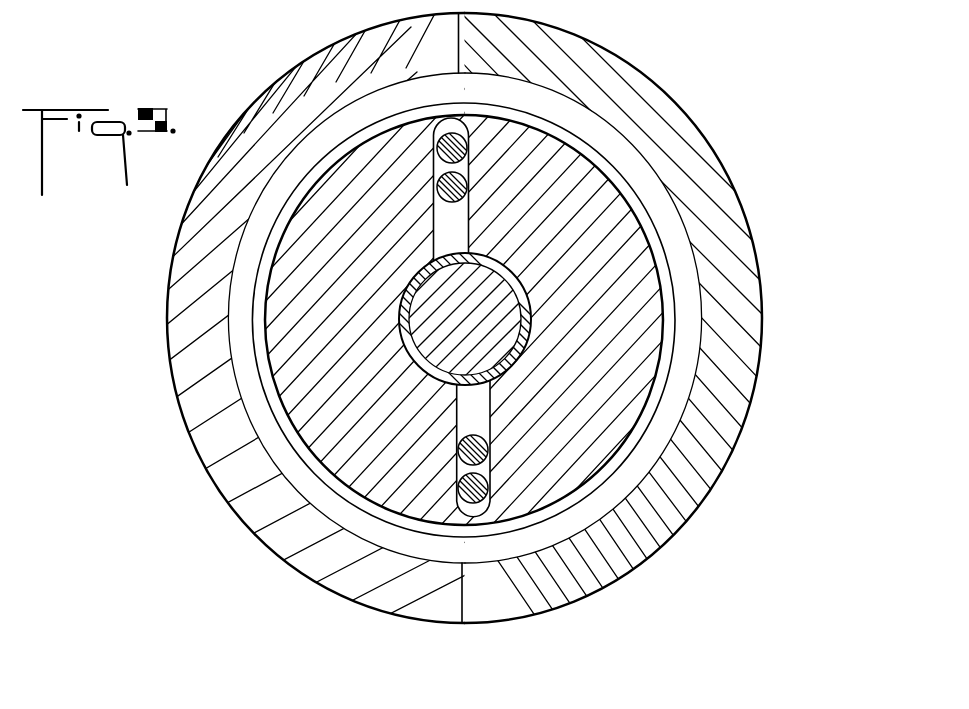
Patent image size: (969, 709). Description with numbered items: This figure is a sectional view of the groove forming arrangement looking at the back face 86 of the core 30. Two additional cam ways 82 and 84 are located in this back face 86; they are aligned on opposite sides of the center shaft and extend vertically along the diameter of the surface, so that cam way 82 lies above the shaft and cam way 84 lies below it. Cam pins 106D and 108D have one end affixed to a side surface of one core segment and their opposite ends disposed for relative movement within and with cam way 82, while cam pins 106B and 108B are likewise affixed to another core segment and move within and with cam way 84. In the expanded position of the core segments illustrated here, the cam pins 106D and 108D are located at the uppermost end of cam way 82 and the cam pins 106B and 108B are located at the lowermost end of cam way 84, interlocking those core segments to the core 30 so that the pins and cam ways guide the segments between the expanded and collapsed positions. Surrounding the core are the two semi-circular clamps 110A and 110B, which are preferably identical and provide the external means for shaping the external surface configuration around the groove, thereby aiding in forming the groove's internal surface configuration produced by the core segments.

The core 30 is at (653, 242).
The cam way 82 is at (465, 222).
The cam way 84 is at (481, 399).
The back face 86 is at (637, 324).
The cam pin 106B is at (458, 501).
The cam pin 106D is at (460, 140).
The cam pin 108B is at (490, 457).
The cam pin 108D is at (438, 184).
The semi-circular clamp 110A is at (695, 146).
The semi-circular clamp 110B is at (250, 124).